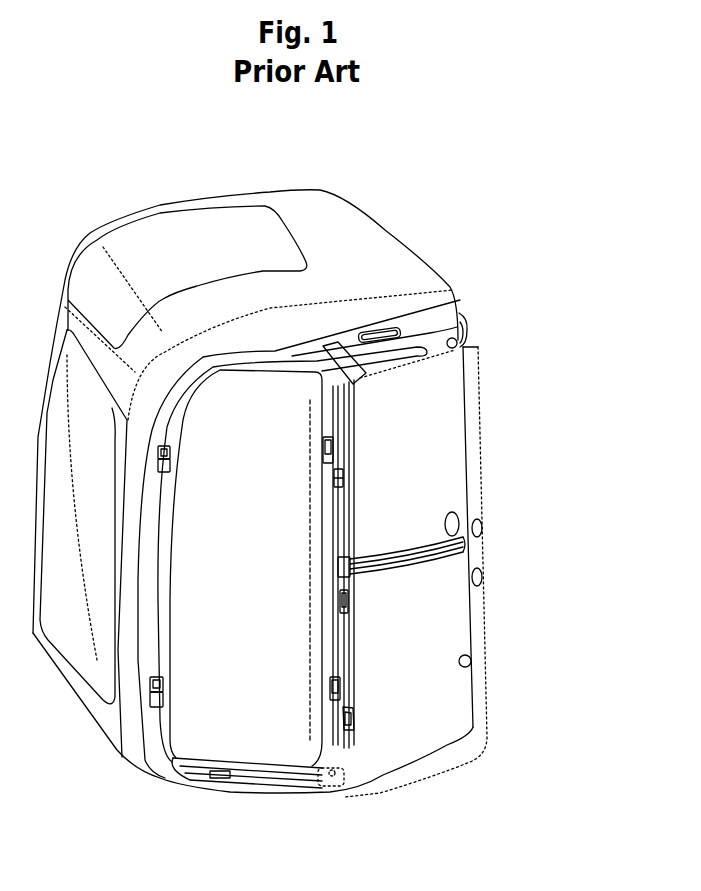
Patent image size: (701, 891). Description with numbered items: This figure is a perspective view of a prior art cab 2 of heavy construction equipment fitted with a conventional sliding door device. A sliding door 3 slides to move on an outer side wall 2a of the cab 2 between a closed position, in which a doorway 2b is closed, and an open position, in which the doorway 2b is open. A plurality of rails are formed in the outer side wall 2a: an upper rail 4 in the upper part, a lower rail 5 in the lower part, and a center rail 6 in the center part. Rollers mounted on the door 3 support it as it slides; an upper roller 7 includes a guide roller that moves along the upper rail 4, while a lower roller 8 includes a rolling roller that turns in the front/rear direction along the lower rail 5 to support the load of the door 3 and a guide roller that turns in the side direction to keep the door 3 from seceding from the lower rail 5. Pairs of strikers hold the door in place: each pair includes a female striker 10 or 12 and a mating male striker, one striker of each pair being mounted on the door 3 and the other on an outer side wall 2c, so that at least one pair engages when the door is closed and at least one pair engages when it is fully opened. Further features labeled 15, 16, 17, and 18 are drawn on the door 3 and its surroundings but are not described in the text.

The cab 2 is at (371, 226).
The outer side wall 2a is at (463, 313).
The doorway 2b is at (214, 751).
The outer side wall 2c is at (240, 378).
The sliding door 3 is at (478, 348).
The upper rail 4 is at (362, 333).
The lower rail 5 is at (277, 786).
The center rail 6 is at (340, 572).
The upper roller 7 is at (336, 384).
The lower roller 8 is at (335, 786).
The female striker 10 is at (172, 456).
The female striker 12 is at (323, 449).
The fastening holes 15 is at (458, 341).
The latch 16 is at (343, 612).
The handle mounting hole 17 is at (458, 515).
The mounting holes 18 is at (481, 578).